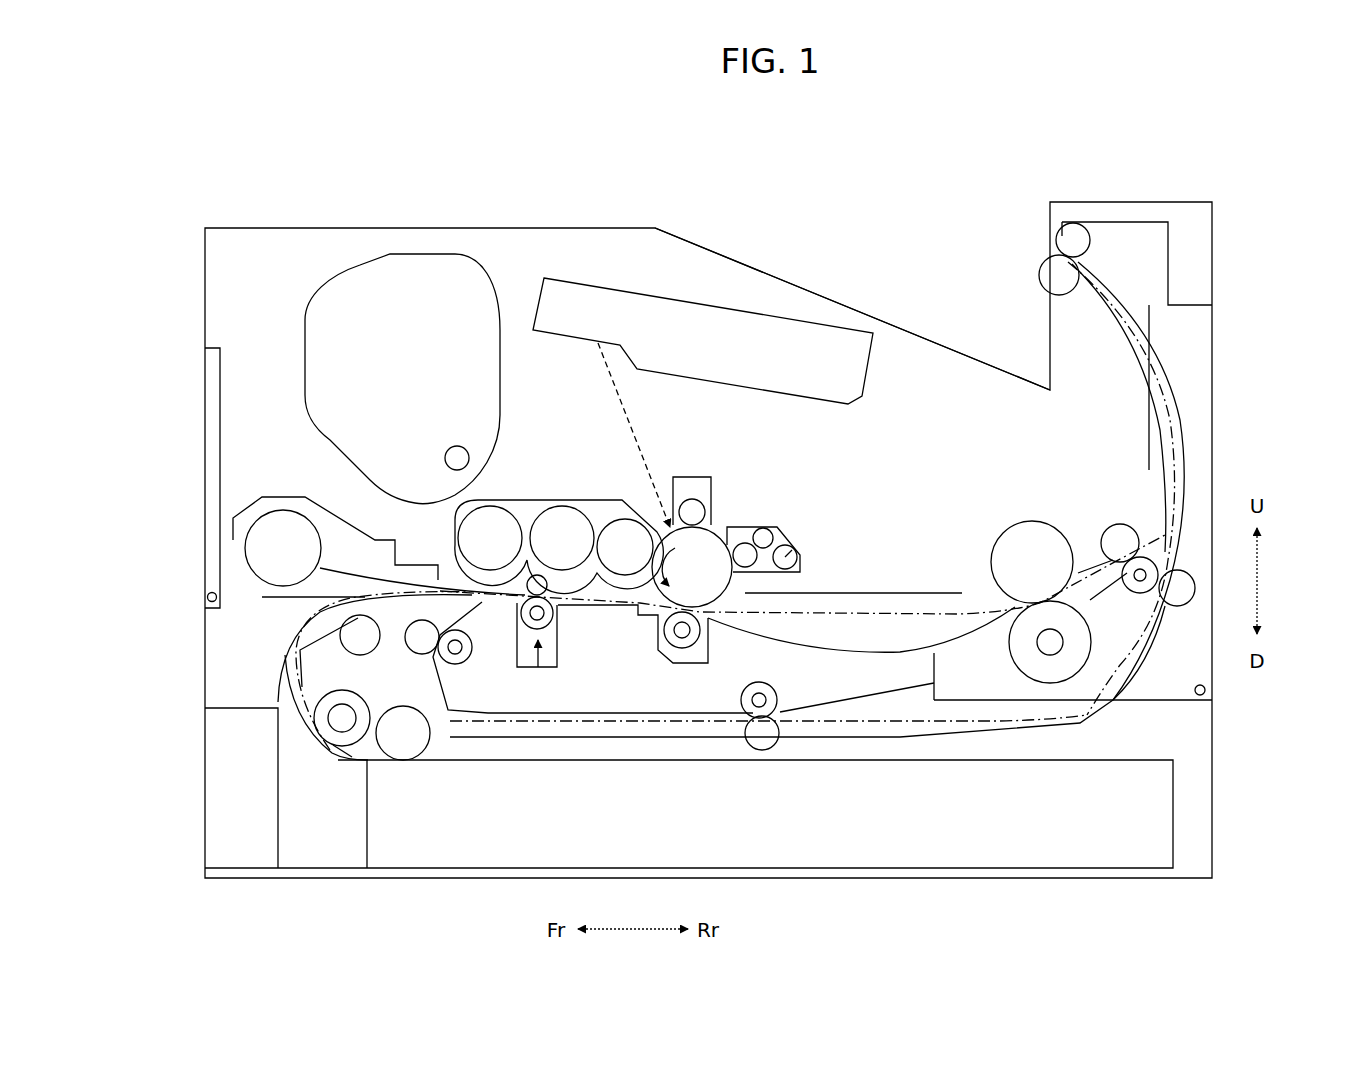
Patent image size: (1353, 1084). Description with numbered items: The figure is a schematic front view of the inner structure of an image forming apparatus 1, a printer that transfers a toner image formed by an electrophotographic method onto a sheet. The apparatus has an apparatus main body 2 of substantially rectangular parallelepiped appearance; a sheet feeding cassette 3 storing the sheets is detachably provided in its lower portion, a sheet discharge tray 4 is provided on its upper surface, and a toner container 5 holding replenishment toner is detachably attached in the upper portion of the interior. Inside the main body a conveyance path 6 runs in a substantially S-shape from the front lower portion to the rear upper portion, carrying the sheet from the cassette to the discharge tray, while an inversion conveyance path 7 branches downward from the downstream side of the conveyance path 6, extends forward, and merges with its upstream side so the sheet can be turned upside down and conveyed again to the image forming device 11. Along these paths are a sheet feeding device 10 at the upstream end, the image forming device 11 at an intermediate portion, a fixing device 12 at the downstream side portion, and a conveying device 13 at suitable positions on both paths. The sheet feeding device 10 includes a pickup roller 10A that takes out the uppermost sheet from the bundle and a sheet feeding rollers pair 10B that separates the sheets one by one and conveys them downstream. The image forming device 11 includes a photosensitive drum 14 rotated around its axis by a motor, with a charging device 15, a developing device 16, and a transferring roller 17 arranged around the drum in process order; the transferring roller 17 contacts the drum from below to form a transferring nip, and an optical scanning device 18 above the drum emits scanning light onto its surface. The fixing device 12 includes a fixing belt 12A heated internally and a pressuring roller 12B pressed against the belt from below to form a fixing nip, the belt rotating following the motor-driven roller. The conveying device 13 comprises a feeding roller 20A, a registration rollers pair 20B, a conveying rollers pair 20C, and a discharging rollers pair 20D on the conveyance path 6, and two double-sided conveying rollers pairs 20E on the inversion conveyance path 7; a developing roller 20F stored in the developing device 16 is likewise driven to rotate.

The image forming apparatus 1 is at (711, 160).
The apparatus main body 2 is at (205, 312).
The sheet feeding cassette 3 is at (205, 803).
The sheet discharge tray 4 is at (826, 296).
The toner container 5 is at (452, 252).
The conveyance path 6 is at (834, 593).
The inversion conveyance path 7 is at (835, 718).
The sheet feeding device 10 is at (430, 915).
The pickup roller 10A is at (405, 750).
The sheet feeding rollers pair 10B is at (340, 755).
The image forming device 11 is at (512, 255).
The fixing device 12 is at (995, 522).
The fixing belt 12A is at (1003, 558).
The pressuring roller 12B is at (1035, 668).
The conveying device 13 is at (1085, 498).
The photosensitive drum 14 is at (718, 532).
The charging device 15 is at (690, 488).
The developing device 16 is at (557, 500).
The transferring roller 17 is at (664, 633).
The optical scanning device 18 is at (570, 328).
The feeding roller 20A is at (360, 650).
The registration rollers pair 20B is at (546, 670).
The conveying rollers pair 20C is at (1135, 528).
The discharging rollers pair 20D is at (1035, 252).
The double-sided conveying rollers pairs 20E is at (465, 670).
The developing roller 20F is at (612, 520).